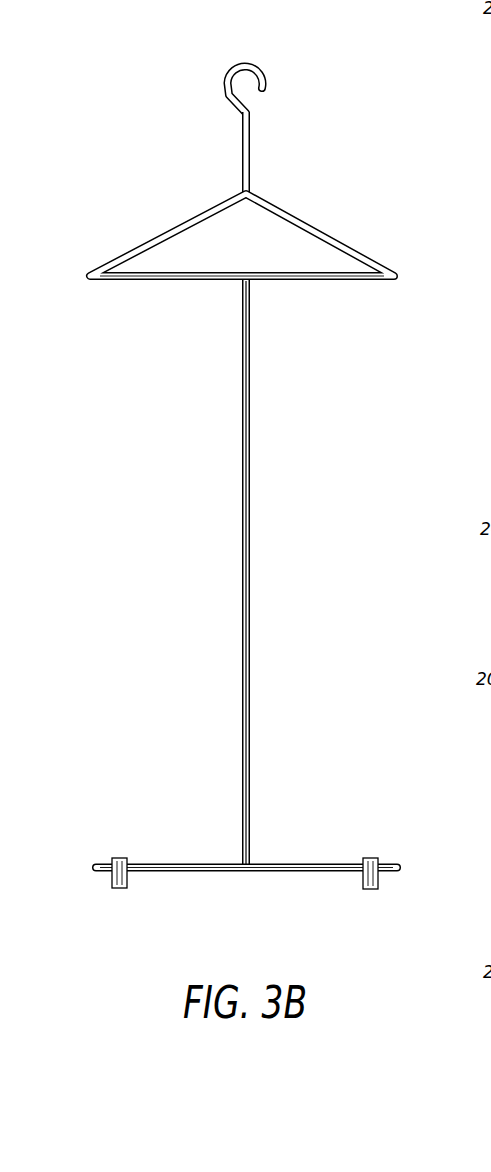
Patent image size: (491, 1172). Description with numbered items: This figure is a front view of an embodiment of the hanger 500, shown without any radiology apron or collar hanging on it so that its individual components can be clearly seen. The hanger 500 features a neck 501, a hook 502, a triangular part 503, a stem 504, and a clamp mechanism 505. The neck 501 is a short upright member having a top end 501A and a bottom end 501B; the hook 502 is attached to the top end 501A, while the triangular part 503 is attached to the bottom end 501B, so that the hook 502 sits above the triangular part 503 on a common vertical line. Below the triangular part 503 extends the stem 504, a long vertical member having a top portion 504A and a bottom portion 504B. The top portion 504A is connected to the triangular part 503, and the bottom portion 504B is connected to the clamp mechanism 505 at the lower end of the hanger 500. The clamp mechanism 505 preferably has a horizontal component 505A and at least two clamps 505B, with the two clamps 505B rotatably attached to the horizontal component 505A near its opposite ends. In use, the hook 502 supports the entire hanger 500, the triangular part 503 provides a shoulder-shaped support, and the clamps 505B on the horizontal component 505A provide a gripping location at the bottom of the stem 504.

The hanger 500 is at (207, 399).
The neck 501 is at (259, 176).
The top end 501A is at (242, 125).
The bottom end 501B is at (243, 184).
The hook 502 is at (262, 65).
The triangular part 503 is at (360, 282).
The stem 504 is at (316, 573).
The top portion 504A is at (250, 324).
The bottom portion 504B is at (250, 852).
The clamp mechanism 505 is at (232, 922).
The horizontal component 505A is at (155, 873).
The clamps 505B is at (112, 888).